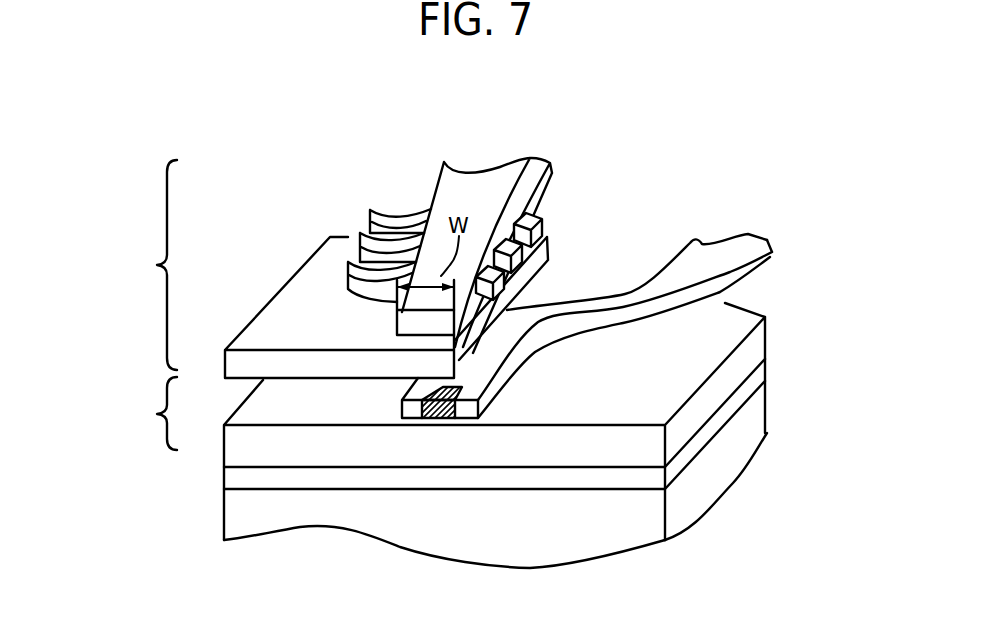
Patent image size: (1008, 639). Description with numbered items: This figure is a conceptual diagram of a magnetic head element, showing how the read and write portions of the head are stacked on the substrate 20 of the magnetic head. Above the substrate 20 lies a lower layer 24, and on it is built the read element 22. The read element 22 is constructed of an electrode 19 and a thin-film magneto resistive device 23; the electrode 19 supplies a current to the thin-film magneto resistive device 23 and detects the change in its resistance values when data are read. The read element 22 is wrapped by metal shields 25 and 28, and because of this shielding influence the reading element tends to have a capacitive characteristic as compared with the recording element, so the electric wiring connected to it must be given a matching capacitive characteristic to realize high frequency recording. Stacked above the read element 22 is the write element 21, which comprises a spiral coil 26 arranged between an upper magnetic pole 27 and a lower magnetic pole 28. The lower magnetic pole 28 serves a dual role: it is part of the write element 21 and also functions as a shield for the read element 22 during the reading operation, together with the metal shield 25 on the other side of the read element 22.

The electrode 19 is at (742, 246).
The substrate 20 is at (590, 552).
The write element 21 is at (147, 265).
The read element 22 is at (147, 413).
The thin-film magneto resistive device 23 is at (433, 413).
The lower layer 24 is at (760, 370).
The metal shield 25 is at (760, 343).
The spiral coil 26 is at (537, 227).
The upper magnetic pole 27 is at (525, 165).
The lower magnetic pole 28 is at (302, 283).